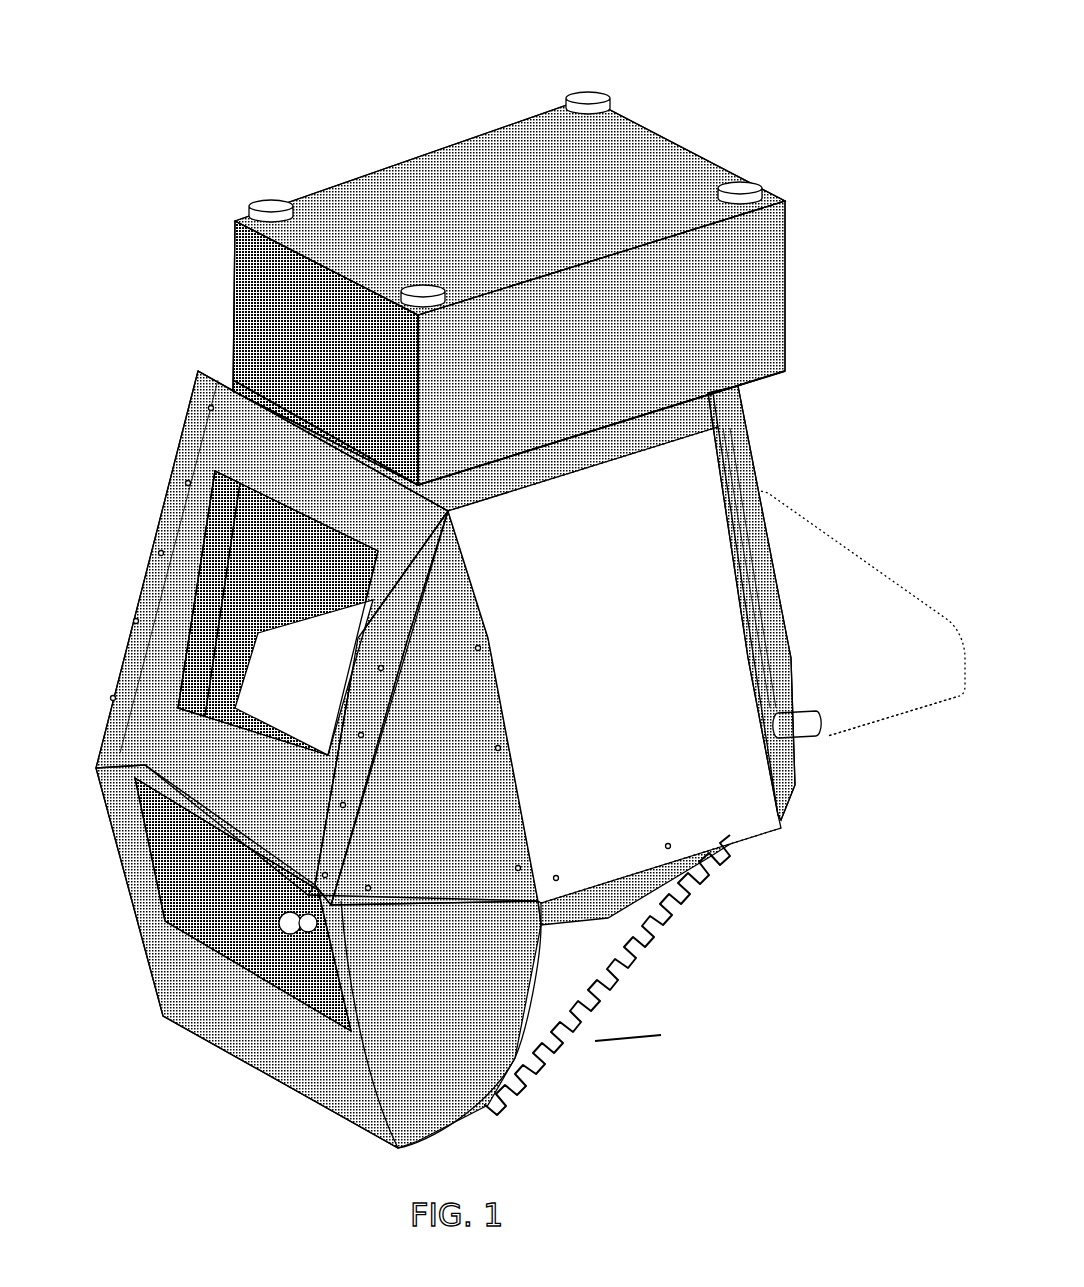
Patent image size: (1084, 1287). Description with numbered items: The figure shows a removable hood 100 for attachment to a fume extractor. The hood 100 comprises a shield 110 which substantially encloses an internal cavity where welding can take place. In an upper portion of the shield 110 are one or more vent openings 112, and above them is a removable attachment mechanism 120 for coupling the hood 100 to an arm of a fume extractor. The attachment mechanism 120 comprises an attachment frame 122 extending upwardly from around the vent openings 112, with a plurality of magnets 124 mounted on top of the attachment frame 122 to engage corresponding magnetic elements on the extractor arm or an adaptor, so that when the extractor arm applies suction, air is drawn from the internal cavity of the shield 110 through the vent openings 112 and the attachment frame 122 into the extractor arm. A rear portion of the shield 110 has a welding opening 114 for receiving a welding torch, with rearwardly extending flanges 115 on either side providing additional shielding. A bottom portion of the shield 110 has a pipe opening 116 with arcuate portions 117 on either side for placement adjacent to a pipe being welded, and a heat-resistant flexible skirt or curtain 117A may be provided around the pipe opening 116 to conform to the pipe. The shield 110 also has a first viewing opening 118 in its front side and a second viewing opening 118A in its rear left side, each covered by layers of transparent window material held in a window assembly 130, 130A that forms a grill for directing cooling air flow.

The removable hood 100 is at (107, 163).
The shield 110 is at (773, 808).
The vent openings 112 is at (462, 240).
The welding opening 114 is at (850, 520).
The rearwardly extending flanges 115 is at (918, 693).
The pipe opening 116 is at (508, 759).
The arcuate portions 117 is at (603, 910).
The skirt or curtain 117A is at (653, 1027).
The first viewing opening 118 is at (182, 565).
The second viewing opening 118A is at (803, 603).
The removable attachment mechanism 120 is at (257, 177).
The attachment frame 122 is at (554, 291).
The magnets 124 is at (583, 92).
The window assembly 130 is at (150, 833).
The window assembly 130A is at (778, 621).